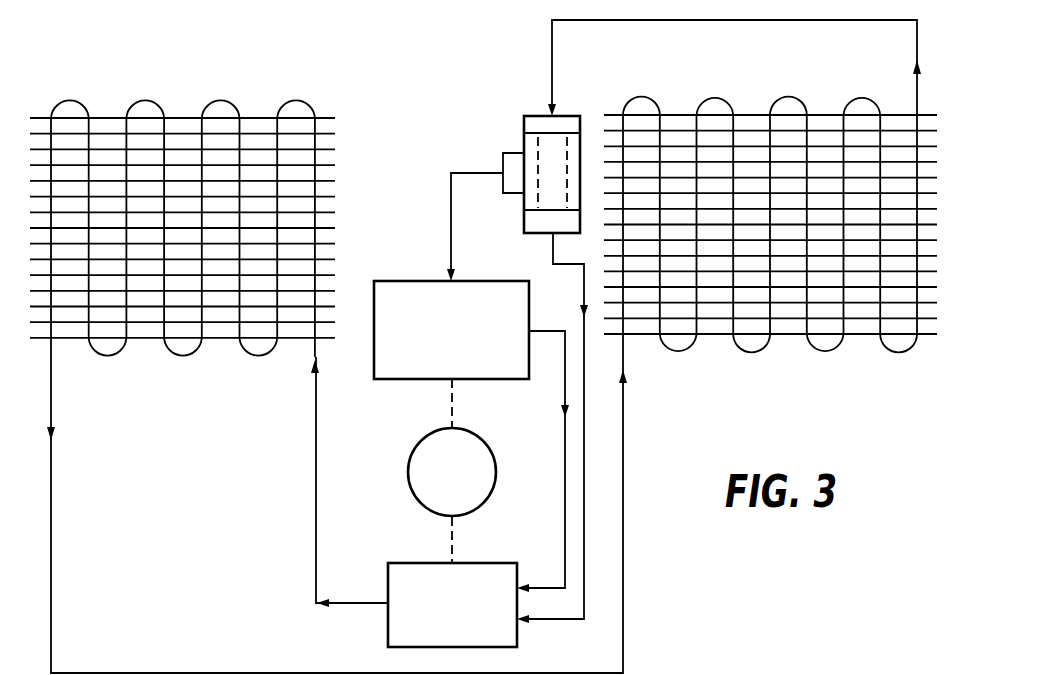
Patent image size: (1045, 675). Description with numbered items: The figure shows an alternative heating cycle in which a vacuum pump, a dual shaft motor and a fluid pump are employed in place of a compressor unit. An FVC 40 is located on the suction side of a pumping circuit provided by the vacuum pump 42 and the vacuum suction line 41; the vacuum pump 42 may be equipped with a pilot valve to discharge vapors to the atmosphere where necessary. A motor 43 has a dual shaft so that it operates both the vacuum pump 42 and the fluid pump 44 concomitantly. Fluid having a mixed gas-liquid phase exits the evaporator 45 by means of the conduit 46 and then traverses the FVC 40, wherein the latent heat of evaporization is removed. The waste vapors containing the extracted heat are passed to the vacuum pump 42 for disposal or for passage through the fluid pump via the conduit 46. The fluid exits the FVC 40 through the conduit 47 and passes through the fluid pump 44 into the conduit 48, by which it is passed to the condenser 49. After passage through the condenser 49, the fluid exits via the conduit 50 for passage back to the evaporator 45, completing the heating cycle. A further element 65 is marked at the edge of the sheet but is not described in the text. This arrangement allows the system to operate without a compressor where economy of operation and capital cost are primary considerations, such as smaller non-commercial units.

The FVC 40 is at (533, 115).
The vacuum suction line 41 is at (451, 213).
The vacuum pump 42 is at (481, 281).
The motor 43 is at (496, 488).
The fluid pump 44 is at (429, 563).
The evaporator 45 is at (825, 87).
The conduit 46 is at (603, 22).
The conduit 47 is at (566, 622).
The conduit 48 is at (316, 557).
The condenser 49 is at (263, 97).
The conduit 50 is at (52, 570).
The component (partially shown) 65 is at (797, 674).